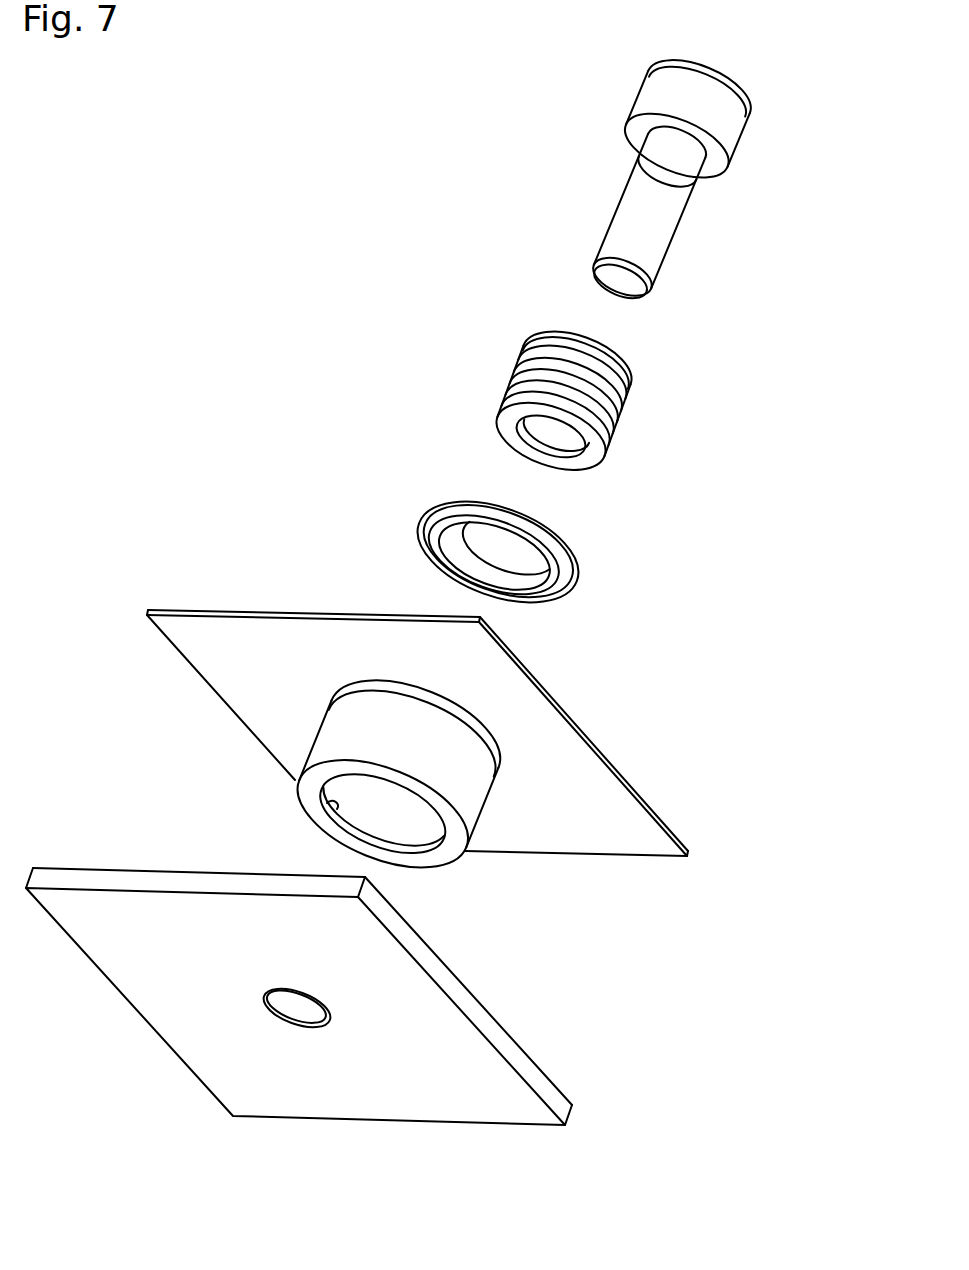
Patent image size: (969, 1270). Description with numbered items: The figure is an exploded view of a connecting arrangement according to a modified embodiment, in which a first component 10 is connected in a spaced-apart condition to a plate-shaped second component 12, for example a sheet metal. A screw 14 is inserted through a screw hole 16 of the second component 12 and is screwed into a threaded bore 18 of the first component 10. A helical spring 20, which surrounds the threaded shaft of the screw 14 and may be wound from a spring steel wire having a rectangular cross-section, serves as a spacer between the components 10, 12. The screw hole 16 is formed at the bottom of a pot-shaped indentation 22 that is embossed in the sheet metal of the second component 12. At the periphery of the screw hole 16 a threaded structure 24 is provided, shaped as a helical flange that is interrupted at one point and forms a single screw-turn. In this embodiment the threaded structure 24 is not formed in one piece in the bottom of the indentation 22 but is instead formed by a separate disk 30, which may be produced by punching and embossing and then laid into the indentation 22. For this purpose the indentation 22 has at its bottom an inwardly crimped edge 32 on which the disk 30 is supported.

The first component 10 is at (527, 1047).
The second component 12 is at (599, 745).
The screw 14 is at (642, 94).
The screw hole 16 is at (334, 810).
The threaded bore 18 is at (293, 1010).
The helical spring 20 is at (518, 364).
The indentation 22 is at (478, 798).
The threaded structure 24 is at (543, 584).
The disk 30 is at (398, 530).
The inwardly crimped edge 32 is at (451, 851).